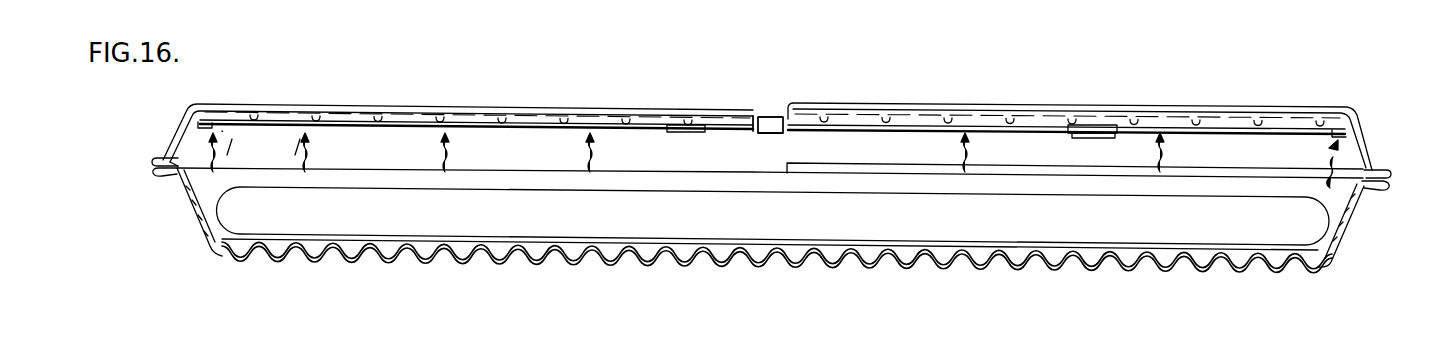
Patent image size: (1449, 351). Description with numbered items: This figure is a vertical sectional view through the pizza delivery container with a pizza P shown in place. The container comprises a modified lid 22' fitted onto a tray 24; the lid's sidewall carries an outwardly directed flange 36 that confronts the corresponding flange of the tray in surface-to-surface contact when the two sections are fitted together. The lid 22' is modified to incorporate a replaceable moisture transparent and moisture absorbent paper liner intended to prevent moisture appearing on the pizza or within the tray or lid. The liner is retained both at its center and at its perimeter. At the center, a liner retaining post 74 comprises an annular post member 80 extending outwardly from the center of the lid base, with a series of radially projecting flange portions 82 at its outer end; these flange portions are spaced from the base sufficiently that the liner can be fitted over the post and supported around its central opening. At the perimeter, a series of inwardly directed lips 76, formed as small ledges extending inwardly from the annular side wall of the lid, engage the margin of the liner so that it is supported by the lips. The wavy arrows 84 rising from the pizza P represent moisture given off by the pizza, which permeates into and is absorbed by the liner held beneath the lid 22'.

The modified lid 22' is at (795, 120).
The tray 24 is at (473, 268).
The flange 36 is at (173, 142).
The central liner retaining post 74 is at (770, 92).
The inwardly directed lips 76 is at (685, 135).
The annular post member 80 is at (755, 118).
The radially projecting flange portions 82 is at (749, 152).
The arrows representing moisture 84 is at (555, 150).
The pizza P is at (752, 222).